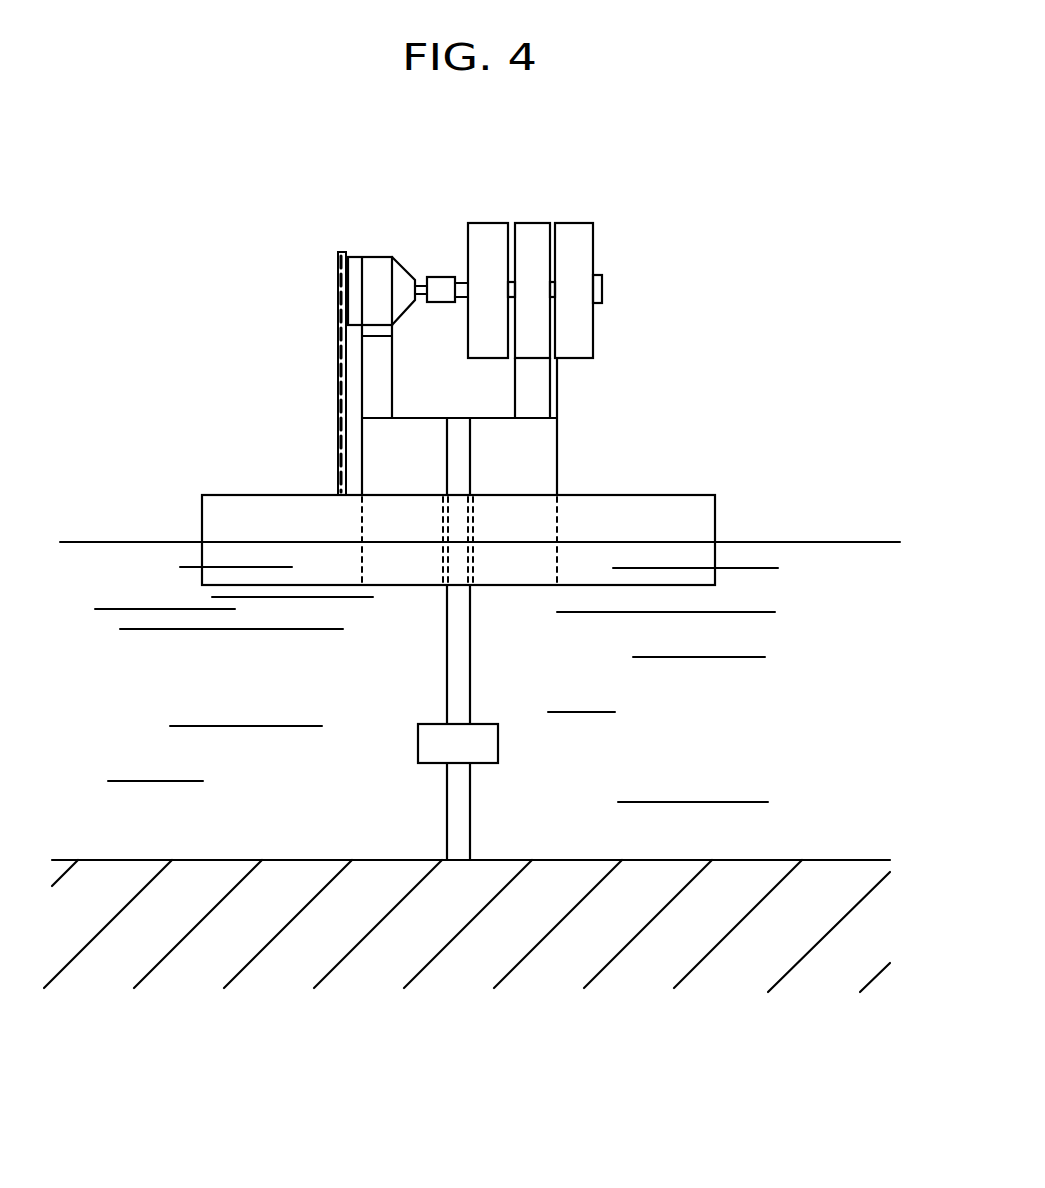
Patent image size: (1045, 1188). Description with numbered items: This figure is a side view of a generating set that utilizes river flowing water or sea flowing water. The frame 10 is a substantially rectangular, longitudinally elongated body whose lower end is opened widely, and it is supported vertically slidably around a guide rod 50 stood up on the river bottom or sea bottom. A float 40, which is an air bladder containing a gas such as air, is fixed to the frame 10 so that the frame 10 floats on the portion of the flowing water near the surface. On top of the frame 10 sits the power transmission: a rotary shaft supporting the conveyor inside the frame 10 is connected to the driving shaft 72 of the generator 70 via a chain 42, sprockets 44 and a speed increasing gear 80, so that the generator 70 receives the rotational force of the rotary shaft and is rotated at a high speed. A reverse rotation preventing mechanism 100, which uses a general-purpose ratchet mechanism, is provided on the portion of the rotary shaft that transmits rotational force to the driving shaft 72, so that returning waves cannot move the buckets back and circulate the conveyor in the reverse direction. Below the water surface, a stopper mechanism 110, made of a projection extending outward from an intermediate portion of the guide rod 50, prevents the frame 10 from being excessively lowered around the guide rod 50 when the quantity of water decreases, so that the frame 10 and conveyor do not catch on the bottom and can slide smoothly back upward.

The frame 10 is at (557, 435).
The float 40 is at (625, 495).
The chain 42 is at (338, 400).
The sprockets 44 is at (338, 288).
The guide rod 50 is at (471, 453).
The generator 70 is at (572, 223).
The driving shaft 72 is at (602, 290).
The speed increasing gear 80 is at (377, 257).
The reverse rotation preventing mechanism 100 is at (358, 257).
The stopper mechanism 110 is at (498, 750).